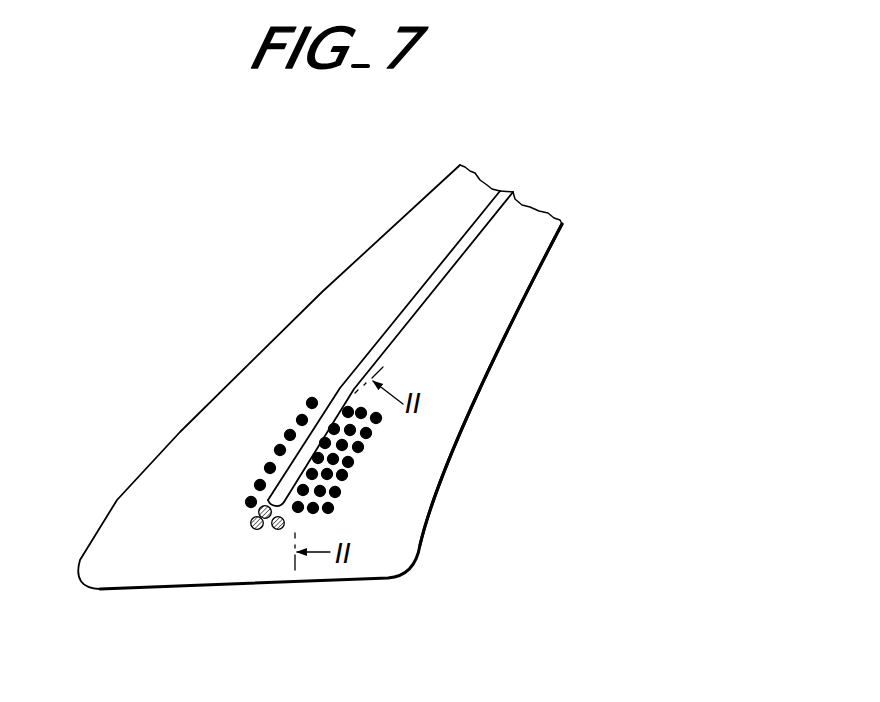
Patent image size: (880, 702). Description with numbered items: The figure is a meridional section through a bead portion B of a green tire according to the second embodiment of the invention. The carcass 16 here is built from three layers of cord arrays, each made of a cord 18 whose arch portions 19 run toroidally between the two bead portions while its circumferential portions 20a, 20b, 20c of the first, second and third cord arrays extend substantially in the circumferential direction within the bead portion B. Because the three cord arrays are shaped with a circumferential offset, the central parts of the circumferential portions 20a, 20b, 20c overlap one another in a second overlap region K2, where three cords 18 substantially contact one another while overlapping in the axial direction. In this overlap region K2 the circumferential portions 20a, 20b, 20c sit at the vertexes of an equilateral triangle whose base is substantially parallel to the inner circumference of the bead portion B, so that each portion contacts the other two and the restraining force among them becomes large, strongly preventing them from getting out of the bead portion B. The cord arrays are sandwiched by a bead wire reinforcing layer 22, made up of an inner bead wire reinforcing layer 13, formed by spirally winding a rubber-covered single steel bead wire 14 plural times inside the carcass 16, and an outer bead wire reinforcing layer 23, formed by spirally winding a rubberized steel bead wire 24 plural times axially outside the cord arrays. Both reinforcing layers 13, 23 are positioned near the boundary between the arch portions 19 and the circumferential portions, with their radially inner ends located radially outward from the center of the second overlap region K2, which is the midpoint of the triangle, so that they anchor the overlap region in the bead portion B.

The bead portion B is at (127, 483).
The inner bead wire reinforcing layer 13 is at (273, 444).
The bead wire 14 is at (289, 432).
The carcass 16 is at (428, 286).
The cord 18 is at (458, 268).
The arch portion 19 is at (504, 214).
The circumferential portion of first cord array 20a is at (256, 528).
The circumferential portion of second cord array 20b is at (279, 530).
The circumferential portion of third cord array 20c is at (259, 502).
The bead wire reinforcing layer 22 is at (315, 387).
The outer bead wire reinforcing layer 23 is at (378, 442).
The bead wire 24 is at (341, 493).
The second overlap region K2 is at (240, 523).